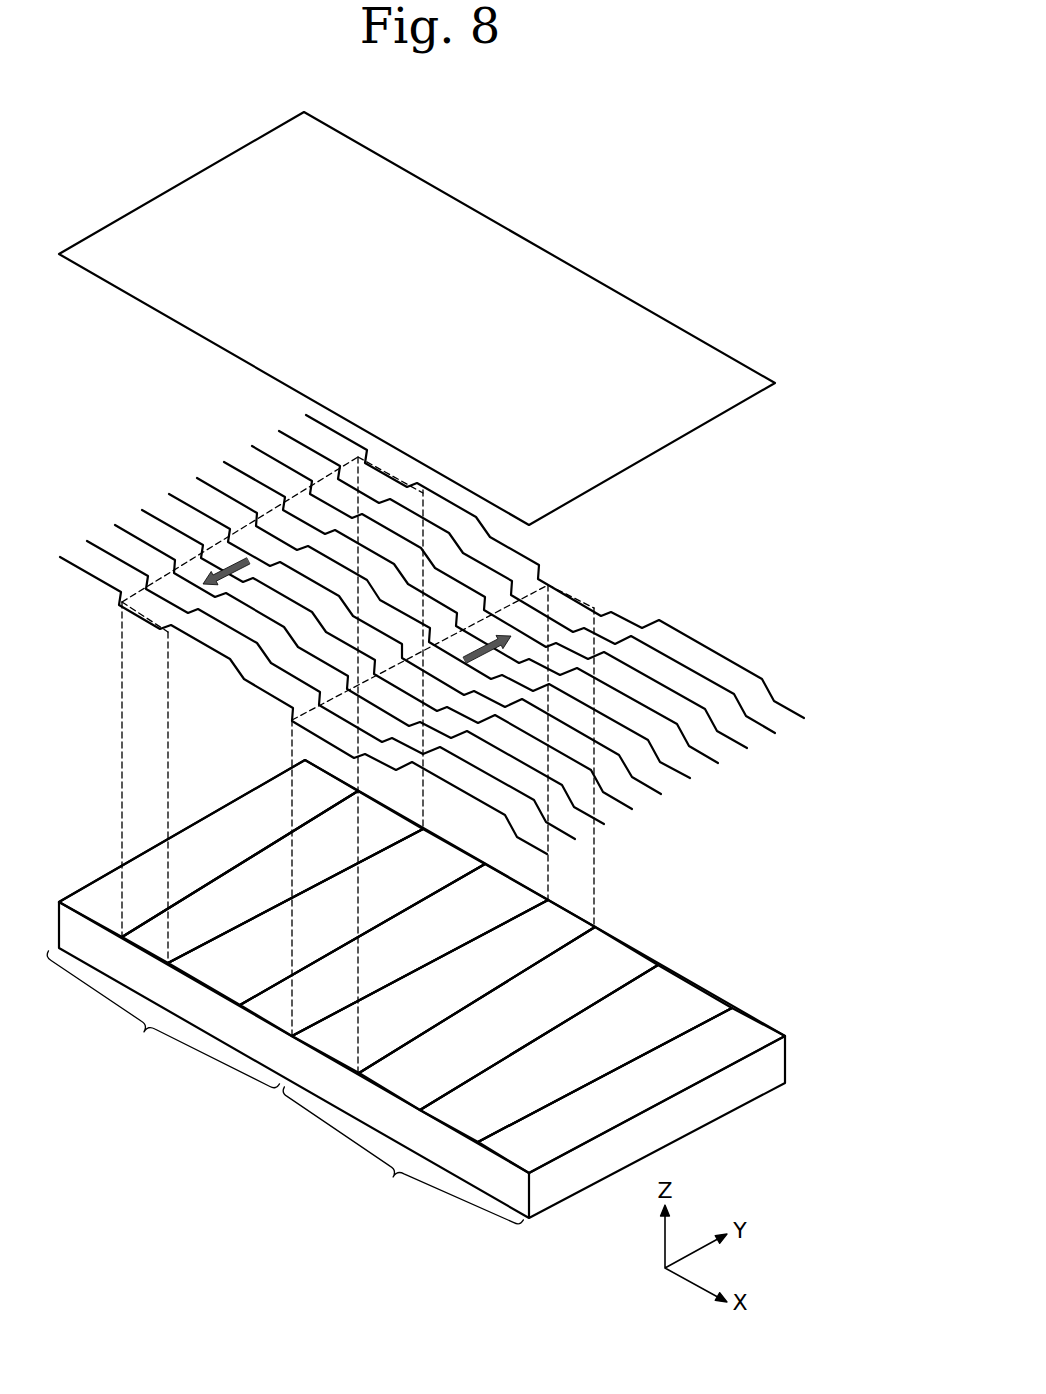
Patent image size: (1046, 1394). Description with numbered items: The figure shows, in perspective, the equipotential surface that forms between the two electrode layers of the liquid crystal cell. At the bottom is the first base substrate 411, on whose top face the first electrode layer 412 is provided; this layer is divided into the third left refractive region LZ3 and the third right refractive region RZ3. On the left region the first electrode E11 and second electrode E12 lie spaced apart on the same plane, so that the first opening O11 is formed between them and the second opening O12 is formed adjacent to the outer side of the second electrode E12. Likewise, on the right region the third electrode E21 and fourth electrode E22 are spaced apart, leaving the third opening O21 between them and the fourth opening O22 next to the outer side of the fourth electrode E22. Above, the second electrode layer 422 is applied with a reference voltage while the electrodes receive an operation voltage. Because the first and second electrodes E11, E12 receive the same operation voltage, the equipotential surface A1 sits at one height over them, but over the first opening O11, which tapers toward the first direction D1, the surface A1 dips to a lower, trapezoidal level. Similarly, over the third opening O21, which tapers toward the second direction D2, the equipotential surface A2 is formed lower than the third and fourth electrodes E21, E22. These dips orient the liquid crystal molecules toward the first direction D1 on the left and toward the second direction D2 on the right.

The second electrode layer 422 is at (707, 356).
The first base substrate 411 is at (773, 1066).
The first electrode layer 412 is at (634, 942).
The first electrode E11 is at (208, 848).
The first opening O11 is at (272, 877).
The second electrode E12 is at (326, 917).
The second opening O12 is at (394, 950).
The third electrode E21 is at (443, 986).
The third opening O21 is at (508, 1018).
The fourth electrode E22 is at (576, 1053).
The fourth opening O22 is at (631, 1090).
The third left refractive region LZ3 is at (163, 1019).
The third right refractive region RZ3 is at (403, 1155).
The equipotential surface A1 is at (124, 628).
The equipotential surface A2 is at (580, 603).
The first direction D1 is at (216, 571).
The second direction D2 is at (487, 640).